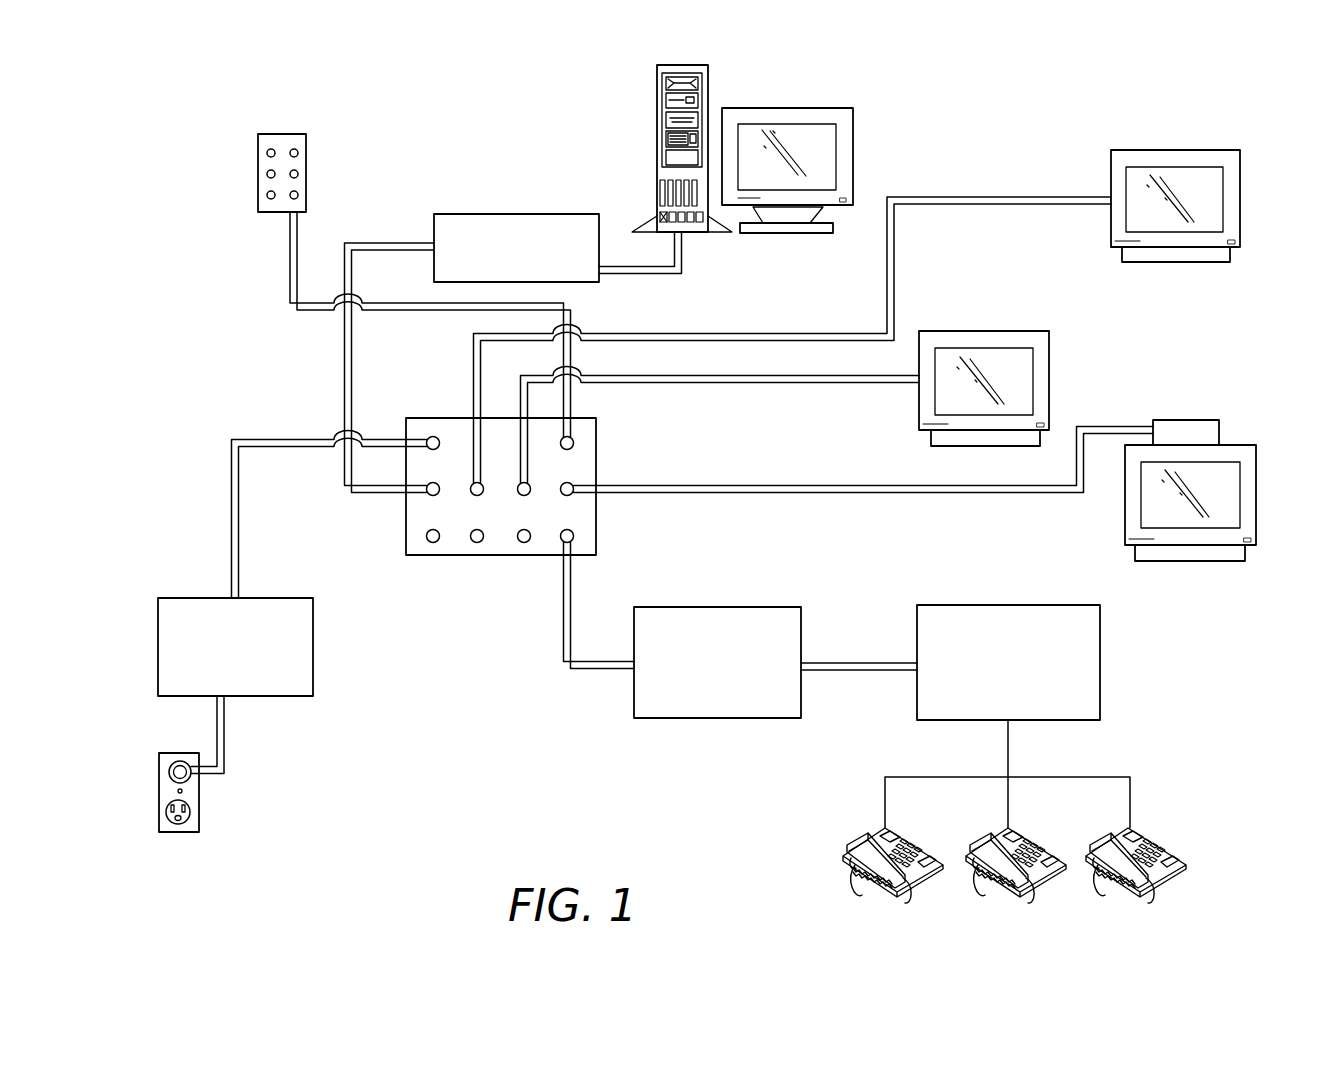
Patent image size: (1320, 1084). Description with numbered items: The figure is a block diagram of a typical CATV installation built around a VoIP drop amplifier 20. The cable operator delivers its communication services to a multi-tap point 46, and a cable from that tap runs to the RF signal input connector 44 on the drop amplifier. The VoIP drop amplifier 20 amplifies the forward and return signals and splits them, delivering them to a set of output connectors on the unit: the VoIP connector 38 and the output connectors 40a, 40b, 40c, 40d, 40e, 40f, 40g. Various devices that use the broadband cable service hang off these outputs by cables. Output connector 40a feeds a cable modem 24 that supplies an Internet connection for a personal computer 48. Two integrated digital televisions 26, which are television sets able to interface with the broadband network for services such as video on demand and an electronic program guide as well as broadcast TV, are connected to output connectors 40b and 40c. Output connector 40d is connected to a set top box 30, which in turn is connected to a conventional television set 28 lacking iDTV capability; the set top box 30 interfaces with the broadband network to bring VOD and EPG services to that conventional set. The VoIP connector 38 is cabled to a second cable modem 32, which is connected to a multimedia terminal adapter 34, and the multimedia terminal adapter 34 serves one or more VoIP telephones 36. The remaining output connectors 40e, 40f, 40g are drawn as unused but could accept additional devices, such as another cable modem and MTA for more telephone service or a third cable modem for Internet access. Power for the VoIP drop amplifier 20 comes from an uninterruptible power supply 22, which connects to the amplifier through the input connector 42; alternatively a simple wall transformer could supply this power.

The VoIP drop amplifier 20 is at (489, 502).
The uninterruptible power supply 22 is at (258, 697).
The cable modem 24 is at (497, 213).
The integrated digital televisions 26 is at (1172, 150).
The conventional television set 28 is at (1212, 562).
The set top box 30 is at (1192, 420).
The second cable modem 32 is at (692, 720).
The multimedia terminal adapter 34 is at (960, 603).
The VoIP telephones 36 is at (875, 830).
The VoIP connector 38 is at (572, 540).
The output connector 40a is at (432, 496).
The output connector 40b is at (472, 486).
The output connector 40c is at (530, 488).
The output connector 40d is at (573, 497).
The output connector 40e is at (433, 543).
The output connector 40f is at (477, 543).
The output connector 40g is at (524, 543).
The input connector 42 is at (433, 437).
The RF signal input connector 44 is at (575, 443).
The multi-tap point 46 is at (257, 169).
The personal computer 48 is at (657, 140).